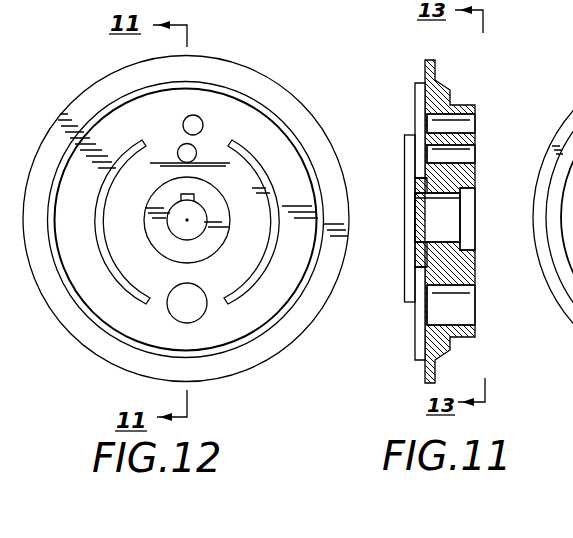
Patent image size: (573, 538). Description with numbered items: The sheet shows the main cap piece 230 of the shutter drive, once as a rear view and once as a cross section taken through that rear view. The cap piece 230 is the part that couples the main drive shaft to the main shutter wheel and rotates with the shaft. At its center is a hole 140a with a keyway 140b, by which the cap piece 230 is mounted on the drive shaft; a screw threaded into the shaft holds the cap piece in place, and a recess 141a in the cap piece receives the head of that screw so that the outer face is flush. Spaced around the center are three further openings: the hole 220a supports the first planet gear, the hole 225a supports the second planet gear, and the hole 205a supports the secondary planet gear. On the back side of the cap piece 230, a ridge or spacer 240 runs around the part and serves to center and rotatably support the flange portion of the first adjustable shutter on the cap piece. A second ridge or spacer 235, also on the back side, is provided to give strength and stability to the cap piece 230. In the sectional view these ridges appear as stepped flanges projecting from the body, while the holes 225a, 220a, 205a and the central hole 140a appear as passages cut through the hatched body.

In FIG. 12, the cap piece 230 is at (100, 363).
In FIG. 11, the cap piece 230 is at (450, 88).
In FIG. 12, the ridge or spacer 240 is at (108, 106).
In FIG. 11, the ridge or spacer 240 is at (418, 86).
In FIG. 12, the second ridge or spacer 235 is at (274, 197).
In FIG. 11, the second ridge or spacer 235 is at (412, 302).
In FIG. 12, the hole 140a is at (182, 210).
In FIG. 11, the hole 140a is at (430, 226).
In FIG. 12, the keyway 140b is at (193, 193).
In FIG. 11, the recess 141a is at (465, 248).
In FIG. 12, the hole 225a is at (196, 122).
In FIG. 11, the hole 225a is at (462, 124).
In FIG. 12, the hole 220a is at (190, 152).
In FIG. 11, the hole 220a is at (462, 154).
In FIG. 12, the hole 205a is at (190, 310).
In FIG. 11, the hole 205a is at (462, 312).